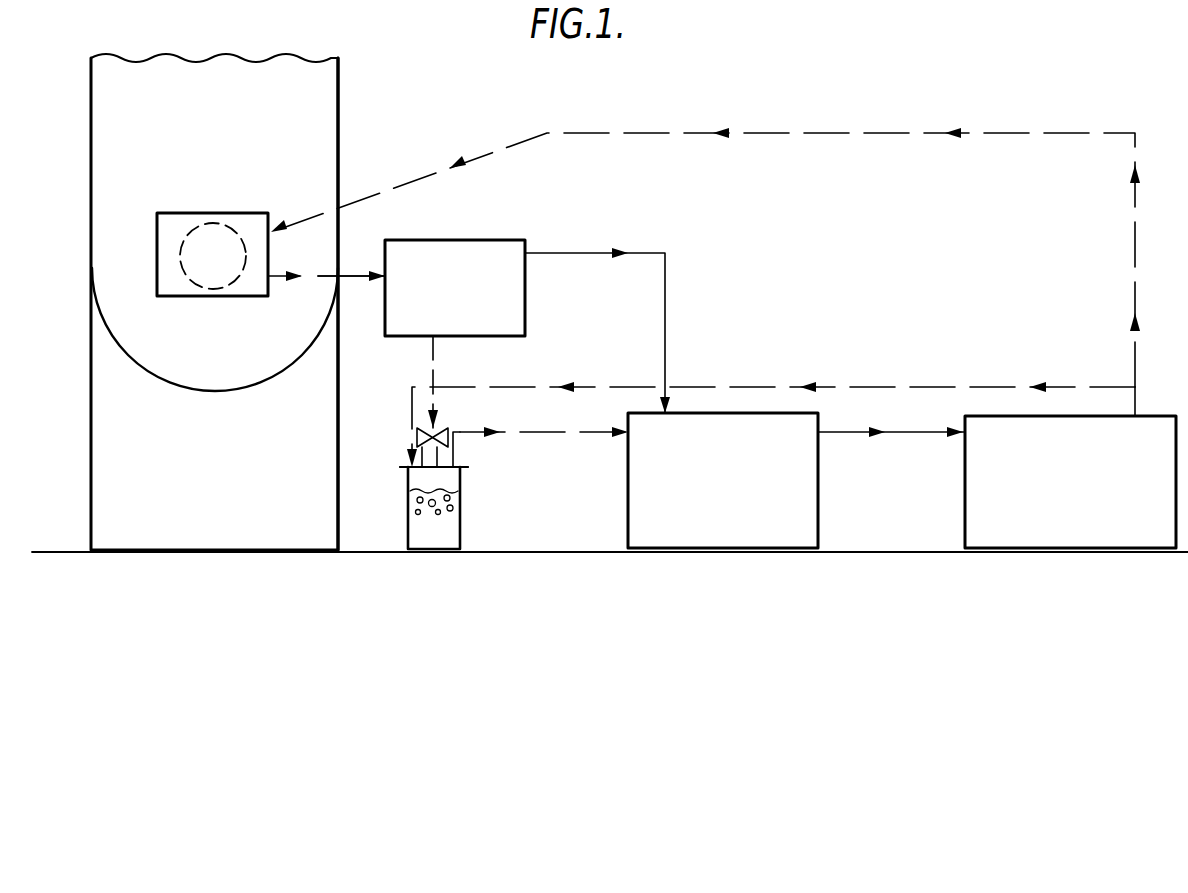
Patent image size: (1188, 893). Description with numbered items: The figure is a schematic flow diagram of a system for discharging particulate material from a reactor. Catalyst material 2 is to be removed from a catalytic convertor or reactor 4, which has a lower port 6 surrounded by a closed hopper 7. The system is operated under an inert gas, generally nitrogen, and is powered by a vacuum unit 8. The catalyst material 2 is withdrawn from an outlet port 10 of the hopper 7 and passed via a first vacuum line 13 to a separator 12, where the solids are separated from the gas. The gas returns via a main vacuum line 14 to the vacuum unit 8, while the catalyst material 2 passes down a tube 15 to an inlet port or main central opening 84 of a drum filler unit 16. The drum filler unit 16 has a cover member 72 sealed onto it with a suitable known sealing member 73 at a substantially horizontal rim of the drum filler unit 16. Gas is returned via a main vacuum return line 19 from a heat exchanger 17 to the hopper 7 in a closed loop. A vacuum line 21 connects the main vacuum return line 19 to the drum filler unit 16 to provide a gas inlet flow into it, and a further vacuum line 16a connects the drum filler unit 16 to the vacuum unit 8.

The catalyst material 2 is at (214, 302).
The catalytic convertor or reactor 4 is at (340, 108).
The lower port 6 is at (181, 252).
The closed hopper 7 is at (186, 297).
The outlet port 10 is at (272, 280).
The first vacuum line 13 is at (347, 272).
The separator 12 is at (455, 288).
The main vacuum line 14 is at (665, 287).
The tube 15 is at (433, 347).
The sealing member 73 is at (408, 469).
The cover member 72 is at (463, 462).
The inlet port or main central opening 84 is at (420, 472).
The drum filler unit 16 is at (463, 518).
The further vacuum line 16a is at (557, 432).
The vacuum unit 8 is at (723, 480).
The heat exchanger 17 is at (1070, 482).
The main vacuum return line 19 is at (640, 133).
The vacuum line 21 is at (908, 385).